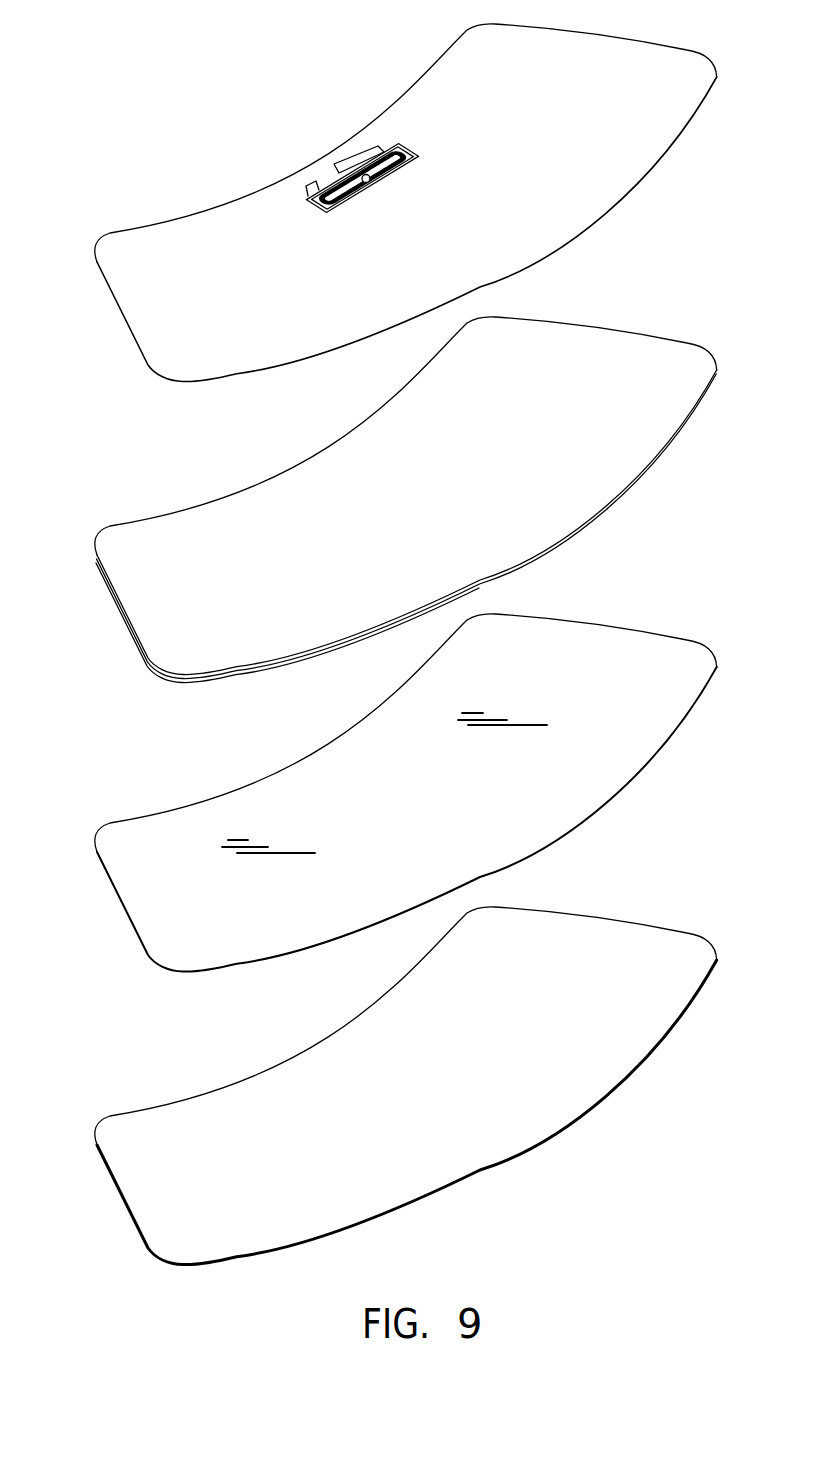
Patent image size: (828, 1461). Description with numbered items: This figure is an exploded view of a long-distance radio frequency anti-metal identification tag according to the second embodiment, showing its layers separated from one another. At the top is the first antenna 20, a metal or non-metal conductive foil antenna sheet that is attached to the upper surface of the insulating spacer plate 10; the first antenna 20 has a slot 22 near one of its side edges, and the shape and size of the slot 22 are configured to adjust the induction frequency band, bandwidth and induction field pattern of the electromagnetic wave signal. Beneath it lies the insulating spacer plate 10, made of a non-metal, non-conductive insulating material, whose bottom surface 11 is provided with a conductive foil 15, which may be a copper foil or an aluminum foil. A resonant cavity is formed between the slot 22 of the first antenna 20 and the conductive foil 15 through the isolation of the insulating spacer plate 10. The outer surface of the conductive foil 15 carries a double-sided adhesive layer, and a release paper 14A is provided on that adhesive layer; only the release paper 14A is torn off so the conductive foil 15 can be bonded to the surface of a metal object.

The insulating spacer plate 10 is at (120, 613).
The bottom surface 11 is at (222, 676).
The release paper 14A is at (155, 1177).
The conductive foil 15 is at (145, 892).
The first antenna 20 is at (203, 338).
The slot 22 is at (322, 187).